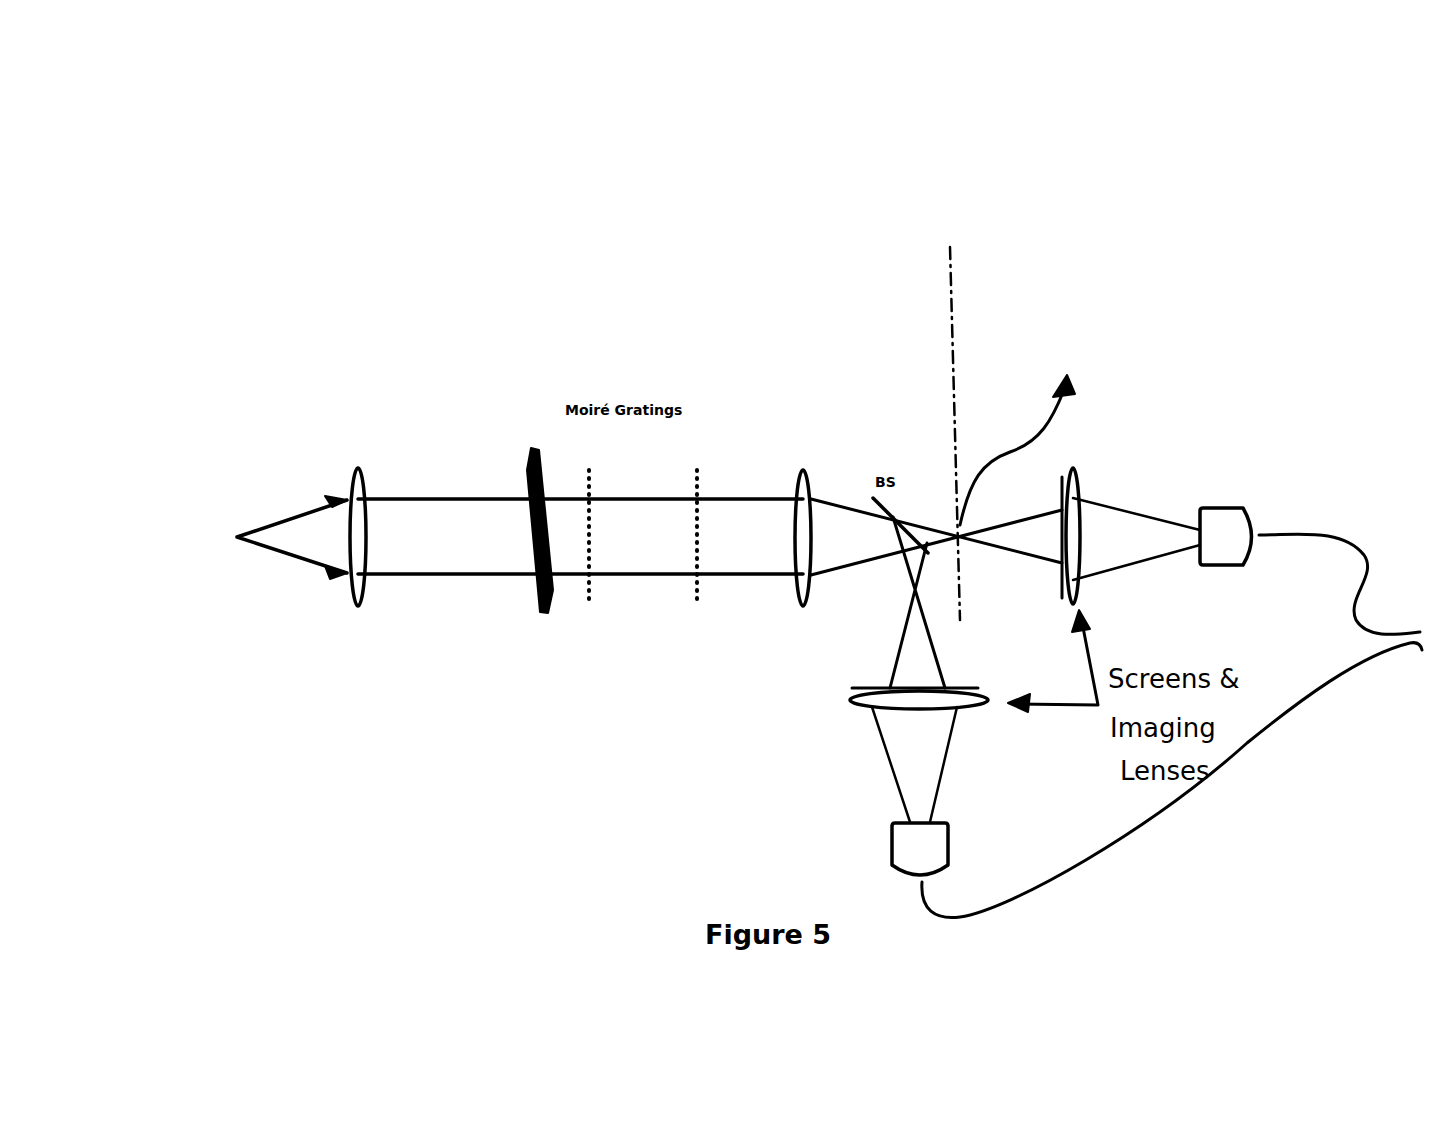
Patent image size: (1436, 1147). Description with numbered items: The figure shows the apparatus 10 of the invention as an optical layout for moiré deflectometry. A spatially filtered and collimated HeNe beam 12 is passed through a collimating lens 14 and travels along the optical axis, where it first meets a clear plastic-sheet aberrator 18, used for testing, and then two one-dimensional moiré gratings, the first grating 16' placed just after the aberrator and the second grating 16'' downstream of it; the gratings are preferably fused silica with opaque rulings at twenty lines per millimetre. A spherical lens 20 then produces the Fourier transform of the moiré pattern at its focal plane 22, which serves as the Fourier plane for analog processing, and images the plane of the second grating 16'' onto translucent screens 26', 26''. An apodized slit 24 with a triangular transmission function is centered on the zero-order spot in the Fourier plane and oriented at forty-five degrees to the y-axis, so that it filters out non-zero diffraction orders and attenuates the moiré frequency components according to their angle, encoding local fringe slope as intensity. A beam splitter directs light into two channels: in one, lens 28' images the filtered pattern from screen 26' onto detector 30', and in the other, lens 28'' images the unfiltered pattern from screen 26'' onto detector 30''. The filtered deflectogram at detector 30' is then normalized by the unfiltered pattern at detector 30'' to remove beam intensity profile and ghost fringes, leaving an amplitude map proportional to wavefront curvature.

The apparatus 10 is at (777, 257).
The HeNe beam 12 is at (243, 496).
The collimating lens 14 is at (348, 596).
The first moiré grating G1 16' is at (606, 513).
The second moiré grating G2 16'' is at (725, 511).
The clear plastic-sheet aberrator 18 is at (544, 586).
The spherical lens 20 is at (800, 579).
The focal plane 22 is at (1057, 427).
The apodized slit 24 is at (1059, 431).
The first translucent screen 26' is at (1107, 493).
The first imaging lens 28' is at (1121, 513).
The first detector (CCD 1) 30' is at (1310, 535).
The second translucent screen 26'' is at (829, 728).
The second imaging lens 28'' is at (870, 747).
The second detector (CCD 2) 30'' is at (1157, 780).